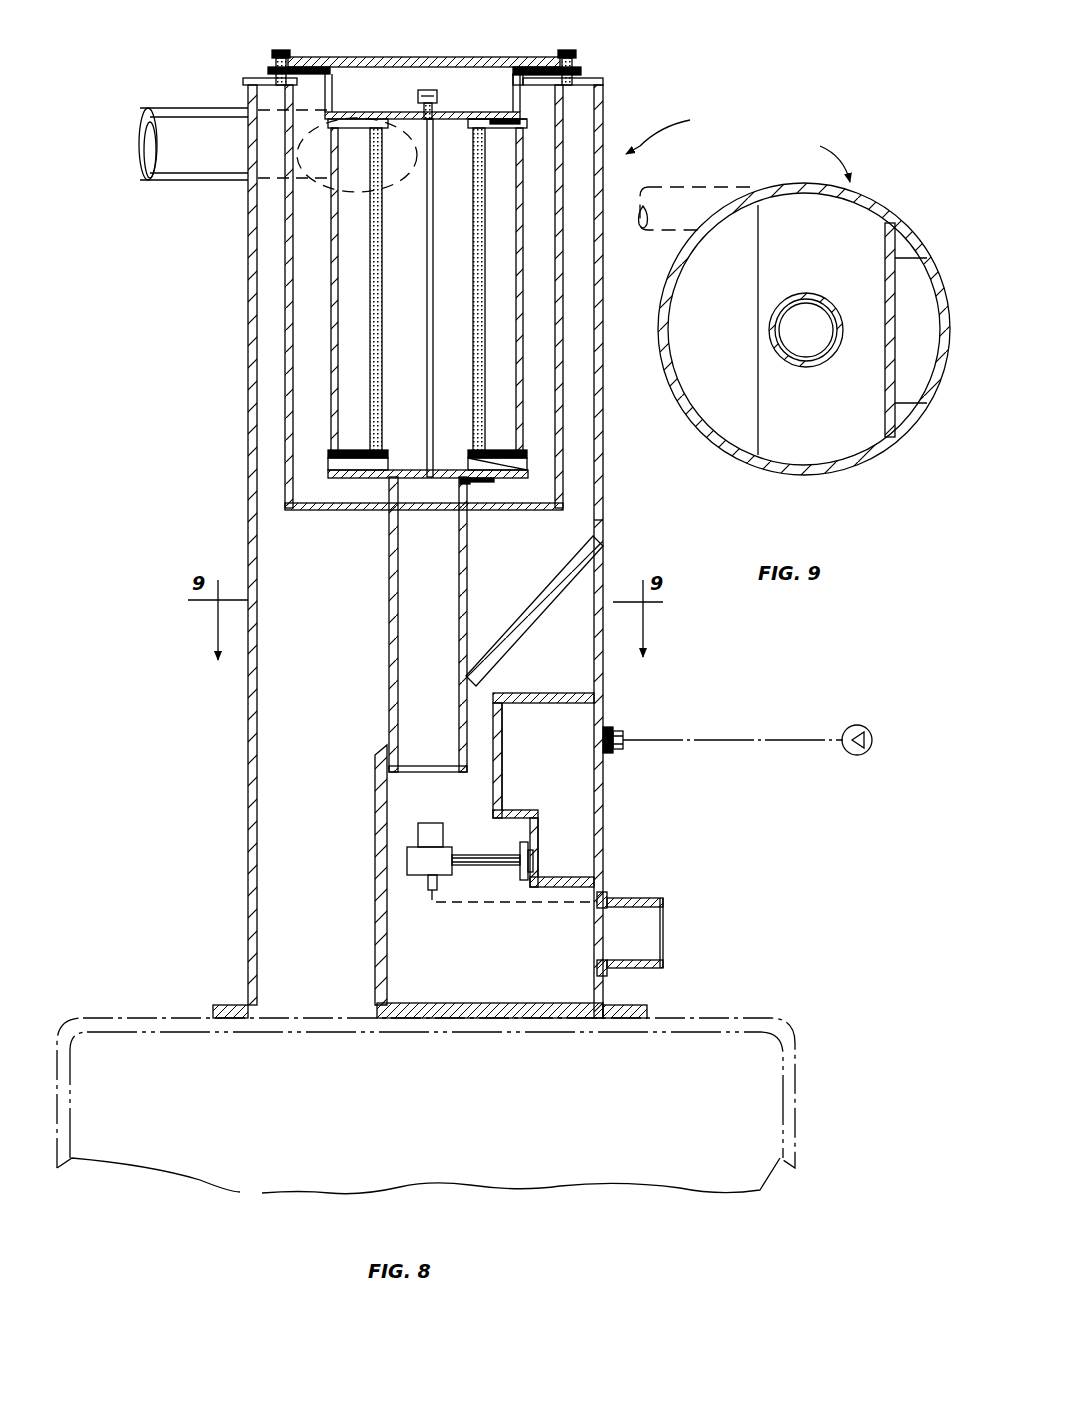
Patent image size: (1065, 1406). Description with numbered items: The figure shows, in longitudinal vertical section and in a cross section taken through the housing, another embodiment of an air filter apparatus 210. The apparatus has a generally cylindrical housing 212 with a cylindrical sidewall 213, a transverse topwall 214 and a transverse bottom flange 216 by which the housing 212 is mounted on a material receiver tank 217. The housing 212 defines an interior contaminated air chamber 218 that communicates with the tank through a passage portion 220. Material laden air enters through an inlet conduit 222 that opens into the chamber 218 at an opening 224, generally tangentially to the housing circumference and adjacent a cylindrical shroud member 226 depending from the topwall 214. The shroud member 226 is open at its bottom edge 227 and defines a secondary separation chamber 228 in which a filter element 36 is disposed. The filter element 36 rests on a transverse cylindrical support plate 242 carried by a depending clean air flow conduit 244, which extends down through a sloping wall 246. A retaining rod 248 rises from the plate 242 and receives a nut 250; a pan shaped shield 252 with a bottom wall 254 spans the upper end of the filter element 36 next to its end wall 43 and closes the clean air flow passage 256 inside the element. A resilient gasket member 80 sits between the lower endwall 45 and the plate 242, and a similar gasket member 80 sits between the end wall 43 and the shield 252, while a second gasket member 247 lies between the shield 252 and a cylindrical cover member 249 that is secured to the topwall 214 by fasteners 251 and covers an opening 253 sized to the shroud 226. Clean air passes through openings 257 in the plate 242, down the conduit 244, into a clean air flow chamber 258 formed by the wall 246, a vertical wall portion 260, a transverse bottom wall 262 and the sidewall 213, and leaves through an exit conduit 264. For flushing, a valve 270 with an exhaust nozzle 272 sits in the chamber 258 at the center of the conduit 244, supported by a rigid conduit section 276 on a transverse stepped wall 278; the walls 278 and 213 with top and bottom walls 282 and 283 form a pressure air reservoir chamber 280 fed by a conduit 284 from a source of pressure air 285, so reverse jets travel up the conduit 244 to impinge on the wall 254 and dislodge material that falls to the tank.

In FIG. 8, the filter element 36 is at (525, 282).
In FIG. 8, the end wall 43 is at (494, 130).
In FIG. 8, the endwall 45 is at (492, 456).
In FIG. 8, the resilient gasket member 80 is at (487, 484).
In FIG. 8, the air filter apparatus 210 is at (677, 128).
In FIG. 9, the air filter apparatus 210 is at (815, 156).
In FIG. 8, the housing 212 is at (600, 460).
In FIG. 9, the housing 212 is at (901, 438).
In FIG. 8, the cylindrical sidewall 213 is at (601, 525).
In FIG. 9, the cylindrical sidewall 213 is at (845, 474).
In FIG. 8, the transverse topwall 214 is at (594, 76).
In FIG. 8, the transverse bottom flange 216 is at (619, 1004).
In FIG. 8, the material receiver tank 217 is at (725, 994).
In FIG. 8, the interior contaminated air chamber 218 is at (323, 612).
In FIG. 8, the passage portion 220 is at (318, 802).
In FIG. 9, the passage portion 220 is at (730, 346).
In FIG. 8, the inlet conduit 222 is at (216, 176).
In FIG. 9, the inlet conduit 222 is at (702, 180).
In FIG. 8, the opening 224 is at (336, 192).
In FIG. 8, the shroud member 226 is at (563, 402).
In FIG. 8, the bottom edge 227 is at (294, 512).
In FIG. 8, the secondary separation chamber 228 is at (358, 502).
In FIG. 8, the support plate 242 is at (475, 488).
In FIG. 8, the clean air flow conduit 244 is at (388, 655).
In FIG. 9, the clean air flow conduit 244 is at (812, 372).
In FIG. 8, the sloping wall 246 is at (544, 593).
In FIG. 9, the sloping wall 246 is at (792, 454).
In FIG. 8, the second gasket member 247 is at (522, 78).
In FIG. 8, the retaining rod 248 is at (424, 392).
In FIG. 8, the cover member 249 is at (493, 72).
In FIG. 8, the nut 250 is at (440, 98).
In FIG. 8, the fasteners 251 is at (272, 50).
In FIG. 8, the shield 252 is at (340, 59).
In FIG. 8, the opening 253 is at (296, 64).
In FIG. 8, the bottom wall 254 is at (341, 106).
In FIG. 8, the clean air flow passage 256 is at (422, 274).
In FIG. 8, the openings 257 is at (444, 480).
In FIG. 8, the clean air flow chamber 258 is at (509, 942).
In FIG. 8, the vertical wall portion 260 is at (376, 876).
In FIG. 8, the transverse bottom wall 262 is at (437, 1004).
In FIG. 8, the exit conduit 264 is at (618, 899).
In FIG. 8, the valve 270 is at (406, 855).
In FIG. 8, the exhaust nozzle 272 is at (437, 822).
In FIG. 8, the rigid conduit section 276 is at (469, 850).
In FIG. 8, the transverse stepped wall 278 is at (509, 770).
In FIG. 8, the pressure air reservoir chamber 280 is at (574, 792).
In FIG. 8, the top wall 282 is at (560, 702).
In FIG. 8, the bottom wall 283 is at (549, 876).
In FIG. 8, the conduit 284 is at (704, 738).
In FIG. 8, the source of pressure air 285 is at (864, 728).